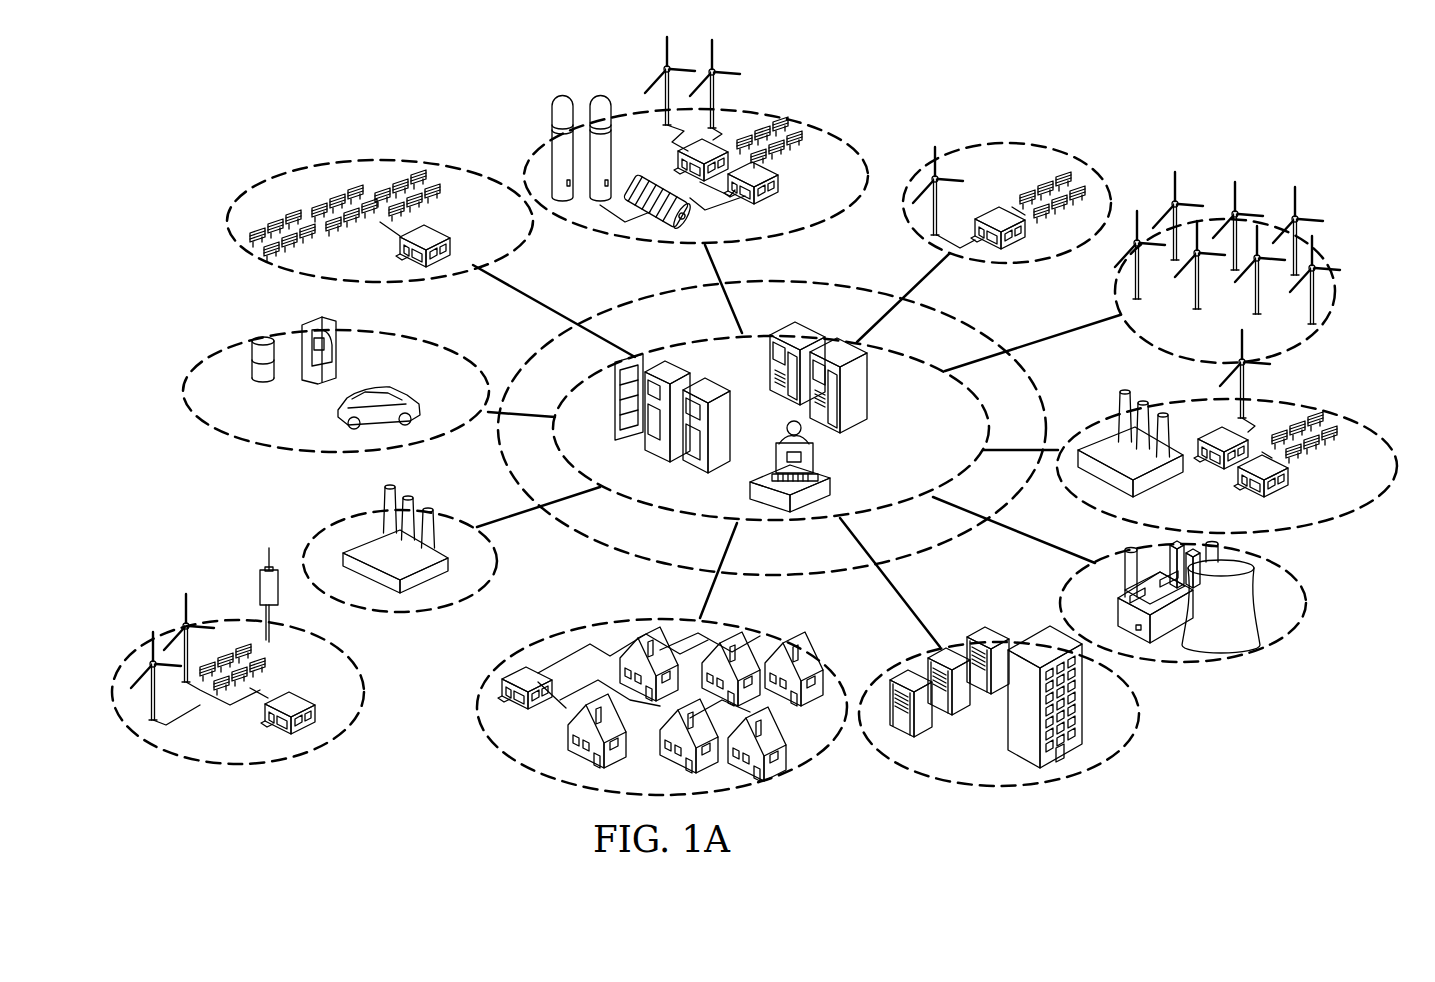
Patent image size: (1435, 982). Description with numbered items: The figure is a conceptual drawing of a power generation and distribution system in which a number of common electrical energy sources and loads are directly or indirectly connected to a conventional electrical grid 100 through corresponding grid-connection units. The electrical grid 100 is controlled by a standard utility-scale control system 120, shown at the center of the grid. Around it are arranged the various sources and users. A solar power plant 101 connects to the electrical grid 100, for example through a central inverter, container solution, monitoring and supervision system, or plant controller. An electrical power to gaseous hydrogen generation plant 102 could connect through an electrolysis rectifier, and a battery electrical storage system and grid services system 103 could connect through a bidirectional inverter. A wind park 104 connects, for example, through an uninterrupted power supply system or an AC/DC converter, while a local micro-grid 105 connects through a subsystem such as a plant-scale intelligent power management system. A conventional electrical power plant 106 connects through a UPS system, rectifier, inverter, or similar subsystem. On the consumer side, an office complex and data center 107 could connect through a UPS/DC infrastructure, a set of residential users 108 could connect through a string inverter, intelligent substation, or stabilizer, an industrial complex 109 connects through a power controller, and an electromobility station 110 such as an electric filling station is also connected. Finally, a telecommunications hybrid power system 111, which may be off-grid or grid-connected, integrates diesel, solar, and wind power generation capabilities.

The electrical grid 100 is at (638, 298).
The utility-scale control system 120 is at (930, 437).
The solar power plant 101 is at (276, 177).
The electrical power to gaseous hydrogen generation plant 102 is at (820, 126).
The battery electrical storage system/grid services system 103 is at (1056, 147).
The wind park 104 is at (1343, 302).
The local micro-grid 105 is at (1346, 524).
The conventional electrical power plant 106 is at (1230, 668).
The office complex and data center 107 is at (1070, 786).
The residential users 108 is at (563, 791).
The industrial complex 109 is at (424, 615).
The electromobility station 110 is at (214, 351).
The telecommunications hybrid power system 111 is at (184, 762).